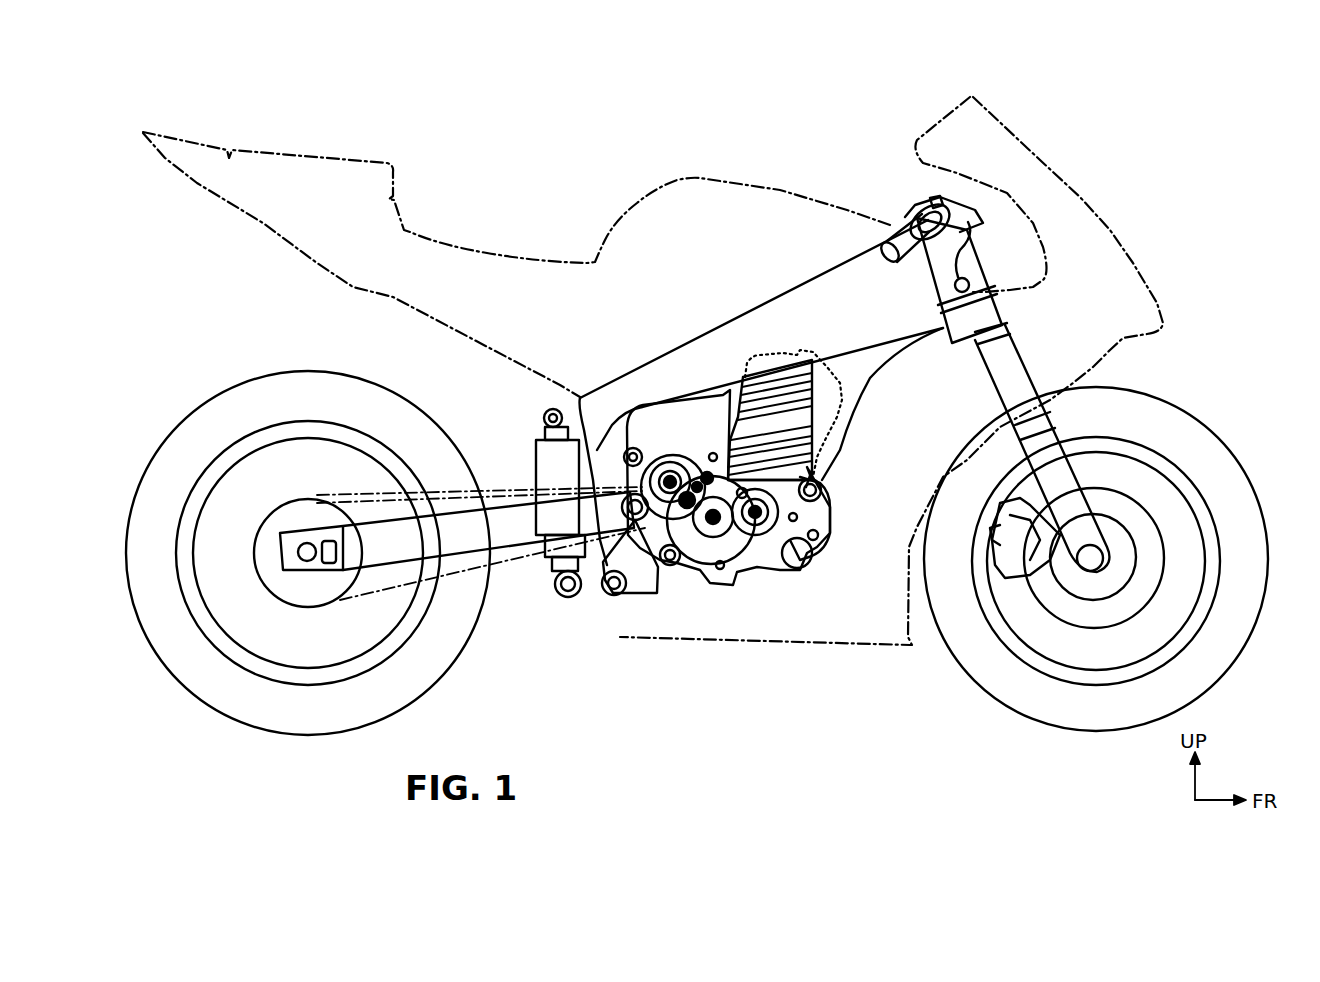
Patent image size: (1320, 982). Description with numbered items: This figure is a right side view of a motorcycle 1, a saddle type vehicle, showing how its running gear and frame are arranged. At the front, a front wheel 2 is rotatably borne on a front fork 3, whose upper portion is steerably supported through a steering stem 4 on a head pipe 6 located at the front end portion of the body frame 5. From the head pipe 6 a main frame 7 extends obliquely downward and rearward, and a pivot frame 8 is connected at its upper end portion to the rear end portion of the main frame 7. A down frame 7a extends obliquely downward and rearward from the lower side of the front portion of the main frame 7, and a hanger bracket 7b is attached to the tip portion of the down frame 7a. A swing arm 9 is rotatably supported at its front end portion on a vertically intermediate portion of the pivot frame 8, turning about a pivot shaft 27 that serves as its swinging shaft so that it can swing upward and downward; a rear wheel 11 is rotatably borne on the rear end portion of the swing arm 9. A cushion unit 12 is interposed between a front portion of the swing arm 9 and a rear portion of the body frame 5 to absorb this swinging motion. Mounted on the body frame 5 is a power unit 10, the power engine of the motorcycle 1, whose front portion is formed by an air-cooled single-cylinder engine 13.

The motorcycle 1 is at (826, 128).
The front wheel 2 is at (1210, 448).
The front fork 3 is at (1063, 478).
The steering stem 4 is at (998, 318).
The body frame 5 is at (762, 390).
The head pipe 6 is at (935, 285).
The main frame 7 is at (763, 317).
The down frame 7a is at (847, 420).
The hanger bracket 7b is at (832, 513).
The pivot frame 8 is at (643, 582).
The swing arm 9 is at (460, 548).
The power unit 10 is at (761, 494).
The rear wheel 11 is at (228, 402).
The cushion unit 12 is at (552, 475).
The engine 13 is at (822, 568).
The pivot shaft 27 is at (637, 518).